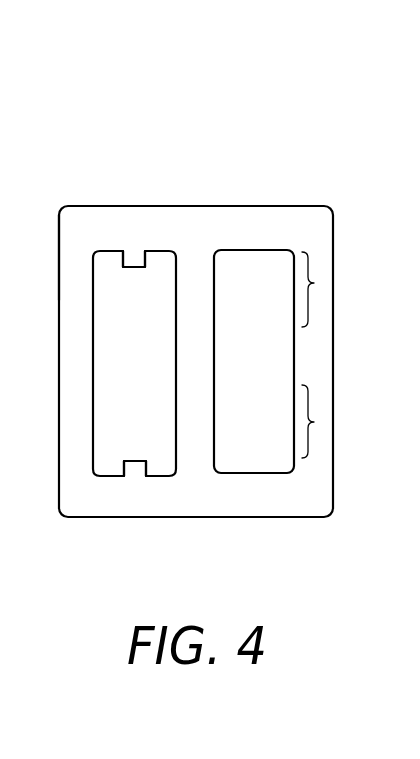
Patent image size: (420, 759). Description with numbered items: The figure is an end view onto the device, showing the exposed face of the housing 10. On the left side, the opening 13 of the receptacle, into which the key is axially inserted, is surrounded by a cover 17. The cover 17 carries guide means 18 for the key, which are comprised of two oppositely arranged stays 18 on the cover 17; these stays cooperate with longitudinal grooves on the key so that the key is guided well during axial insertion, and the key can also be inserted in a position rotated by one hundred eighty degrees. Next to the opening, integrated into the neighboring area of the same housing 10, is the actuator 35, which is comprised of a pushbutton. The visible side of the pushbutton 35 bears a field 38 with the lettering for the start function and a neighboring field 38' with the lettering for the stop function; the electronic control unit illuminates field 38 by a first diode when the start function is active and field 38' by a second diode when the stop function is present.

The housing 10 is at (277, 192).
The opening 13 is at (174, 320).
The cover 17 is at (86, 226).
The guide means 18 is at (135, 257).
The actuator 35 is at (237, 375).
The field with lettering 38 is at (345, 289).
The field with lettering 38' is at (349, 421).